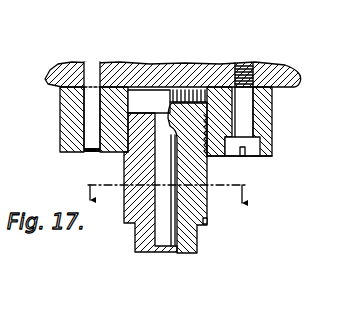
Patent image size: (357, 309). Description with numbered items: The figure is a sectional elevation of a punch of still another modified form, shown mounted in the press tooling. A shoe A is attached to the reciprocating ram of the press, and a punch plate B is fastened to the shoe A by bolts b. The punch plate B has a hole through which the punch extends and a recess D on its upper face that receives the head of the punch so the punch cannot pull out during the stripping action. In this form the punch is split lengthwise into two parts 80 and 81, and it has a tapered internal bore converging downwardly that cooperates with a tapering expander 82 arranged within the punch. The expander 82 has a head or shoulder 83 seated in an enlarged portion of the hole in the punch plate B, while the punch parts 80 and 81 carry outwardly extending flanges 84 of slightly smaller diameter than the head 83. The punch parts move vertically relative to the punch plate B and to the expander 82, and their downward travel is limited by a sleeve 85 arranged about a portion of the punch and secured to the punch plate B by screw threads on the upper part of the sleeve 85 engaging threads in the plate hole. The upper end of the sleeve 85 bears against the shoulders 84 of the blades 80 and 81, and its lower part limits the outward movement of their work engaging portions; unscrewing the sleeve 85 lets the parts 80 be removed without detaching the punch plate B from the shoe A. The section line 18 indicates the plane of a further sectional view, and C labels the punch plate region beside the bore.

The shoe A is at (287, 76).
The punch plate B is at (270, 115).
The block C is at (90, 130).
The recess D is at (109, 93).
The bolts b is at (247, 65).
The section line 18 is at (178, 205).
The punch part 80 is at (192, 243).
The punch part 81 is at (157, 247).
The tapering expander 82 is at (163, 208).
The head or shoulder 83 is at (149, 102).
The flanges 84 is at (100, 153).
The sleeve 85 is at (204, 221).